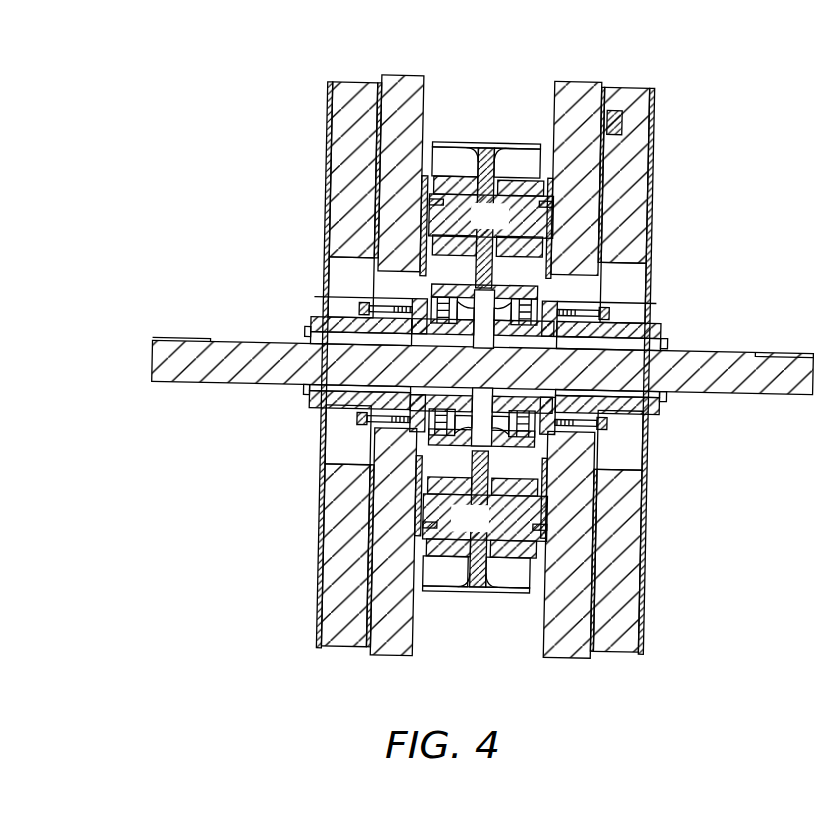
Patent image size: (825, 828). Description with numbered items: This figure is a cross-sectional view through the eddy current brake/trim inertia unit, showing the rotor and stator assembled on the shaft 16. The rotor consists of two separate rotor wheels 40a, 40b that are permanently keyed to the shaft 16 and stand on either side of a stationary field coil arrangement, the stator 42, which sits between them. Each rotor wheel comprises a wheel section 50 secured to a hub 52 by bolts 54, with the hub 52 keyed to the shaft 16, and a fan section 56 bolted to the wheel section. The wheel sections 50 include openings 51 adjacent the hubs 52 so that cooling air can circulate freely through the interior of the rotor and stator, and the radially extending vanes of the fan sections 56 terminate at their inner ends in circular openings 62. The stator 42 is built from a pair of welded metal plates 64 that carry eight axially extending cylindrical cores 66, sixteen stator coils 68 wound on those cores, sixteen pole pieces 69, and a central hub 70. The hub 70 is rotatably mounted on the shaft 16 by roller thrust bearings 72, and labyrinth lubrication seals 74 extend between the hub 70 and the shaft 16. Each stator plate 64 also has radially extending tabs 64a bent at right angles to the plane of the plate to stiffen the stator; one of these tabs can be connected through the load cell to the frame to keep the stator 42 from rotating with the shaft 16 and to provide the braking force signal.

The shaft 16 is at (220, 349).
The rotor wheel 40a is at (419, 62).
The rotor wheel 40b is at (657, 60).
The stator 42 is at (479, 590).
The wheel section 50 is at (484, 356).
The openings 51 is at (390, 284).
The hub 52 is at (326, 398).
The bolts 54 is at (360, 313).
The fan section 56 is at (340, 148).
The circular openings 62 is at (413, 303).
The metal plates 64 is at (490, 266).
The radially extending tabs 64a is at (487, 147).
The cylindrical cores 66 is at (503, 228).
The stator coils 68 is at (457, 172).
The pole pieces 69 is at (405, 239).
The hub 70 is at (472, 274).
The roller thrust bearings 72 is at (492, 358).
The labyrinth lubrication seals 74 is at (437, 410).